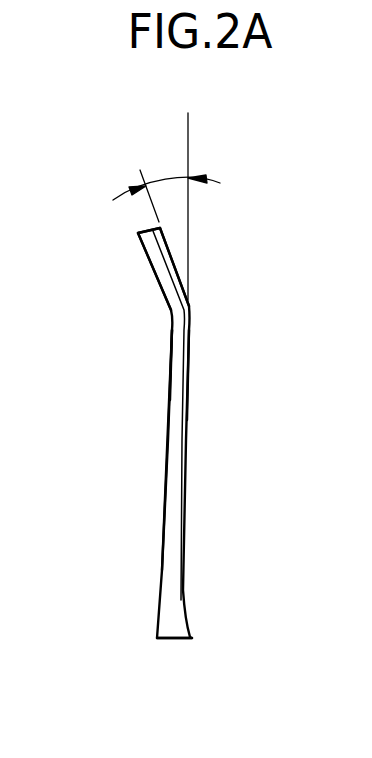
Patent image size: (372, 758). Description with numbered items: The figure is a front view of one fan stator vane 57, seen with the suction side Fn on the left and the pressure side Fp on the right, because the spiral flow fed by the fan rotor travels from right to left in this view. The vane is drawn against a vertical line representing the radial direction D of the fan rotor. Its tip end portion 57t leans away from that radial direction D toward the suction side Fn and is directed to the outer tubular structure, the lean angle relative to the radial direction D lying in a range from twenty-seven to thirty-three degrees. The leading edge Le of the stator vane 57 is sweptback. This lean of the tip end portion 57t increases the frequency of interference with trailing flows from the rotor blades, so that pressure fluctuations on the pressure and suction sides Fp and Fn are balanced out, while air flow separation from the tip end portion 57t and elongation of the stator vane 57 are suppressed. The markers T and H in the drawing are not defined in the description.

The stator vane 57 is at (280, 186).
The tip end portion 57t is at (155, 268).
The tip end T is at (150, 225).
The radial direction D is at (188, 132).
The suction side Fn is at (168, 390).
The pressure side Fp is at (188, 404).
The leading edge Le is at (170, 480).
The base end H is at (178, 640).